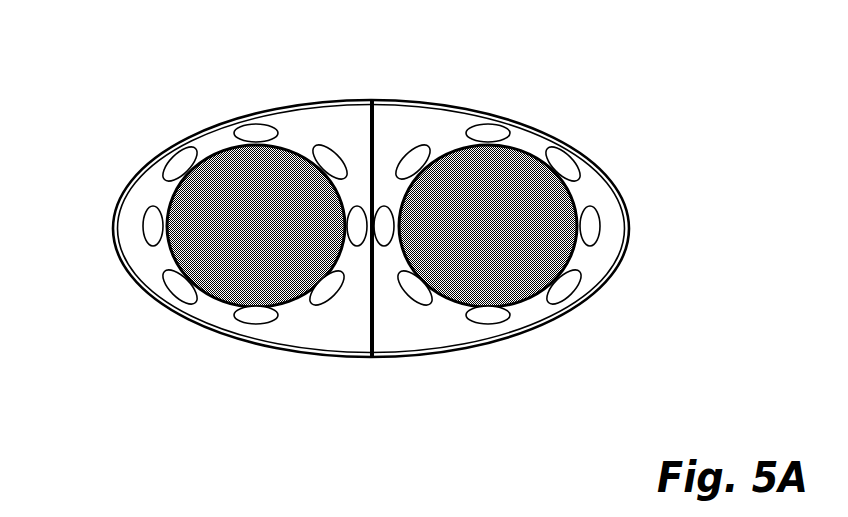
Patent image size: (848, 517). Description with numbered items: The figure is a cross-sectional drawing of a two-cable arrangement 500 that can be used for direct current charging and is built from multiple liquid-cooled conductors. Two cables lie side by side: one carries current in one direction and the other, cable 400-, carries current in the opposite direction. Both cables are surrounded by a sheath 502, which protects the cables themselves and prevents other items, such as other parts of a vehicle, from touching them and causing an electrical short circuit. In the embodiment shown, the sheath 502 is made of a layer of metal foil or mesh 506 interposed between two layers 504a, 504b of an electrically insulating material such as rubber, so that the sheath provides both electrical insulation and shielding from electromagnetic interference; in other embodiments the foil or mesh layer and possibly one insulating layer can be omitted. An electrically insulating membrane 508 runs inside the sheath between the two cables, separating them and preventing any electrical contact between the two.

The two-cable arrangement 500 is at (97, 100).
The sheath 502 is at (561, 136).
The layer of electrically insulating material 504a is at (514, 331).
The layer of electrically insulating material 504b is at (602, 253).
The layer of metal foil or mesh 506 is at (626, 206).
The electrically insulating membrane 508 is at (378, 142).
The cable 400- is at (487, 224).